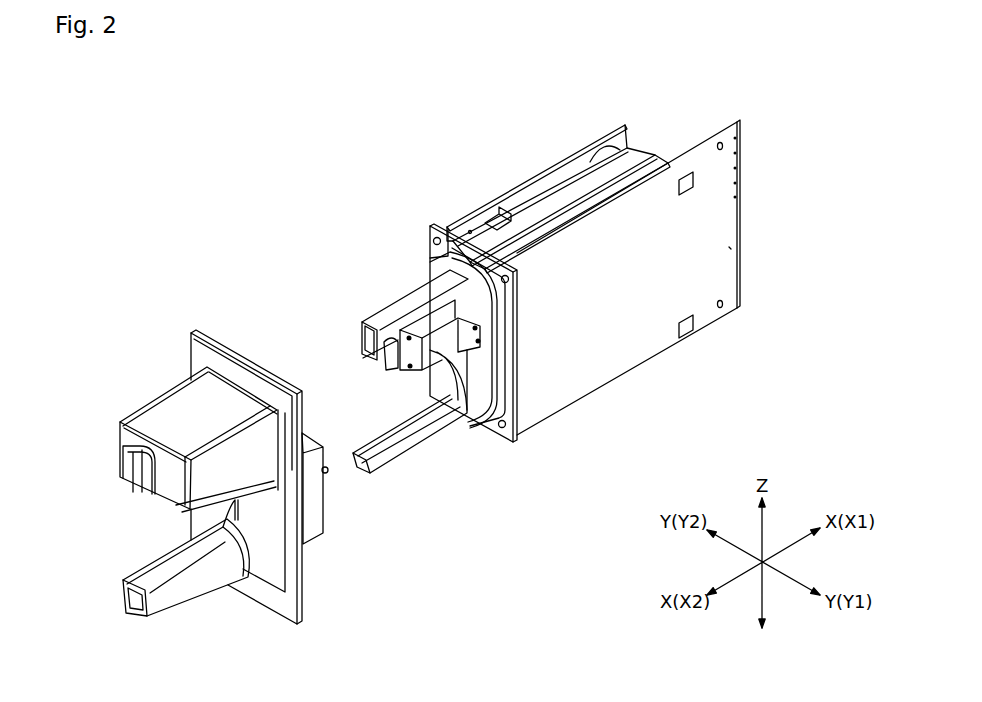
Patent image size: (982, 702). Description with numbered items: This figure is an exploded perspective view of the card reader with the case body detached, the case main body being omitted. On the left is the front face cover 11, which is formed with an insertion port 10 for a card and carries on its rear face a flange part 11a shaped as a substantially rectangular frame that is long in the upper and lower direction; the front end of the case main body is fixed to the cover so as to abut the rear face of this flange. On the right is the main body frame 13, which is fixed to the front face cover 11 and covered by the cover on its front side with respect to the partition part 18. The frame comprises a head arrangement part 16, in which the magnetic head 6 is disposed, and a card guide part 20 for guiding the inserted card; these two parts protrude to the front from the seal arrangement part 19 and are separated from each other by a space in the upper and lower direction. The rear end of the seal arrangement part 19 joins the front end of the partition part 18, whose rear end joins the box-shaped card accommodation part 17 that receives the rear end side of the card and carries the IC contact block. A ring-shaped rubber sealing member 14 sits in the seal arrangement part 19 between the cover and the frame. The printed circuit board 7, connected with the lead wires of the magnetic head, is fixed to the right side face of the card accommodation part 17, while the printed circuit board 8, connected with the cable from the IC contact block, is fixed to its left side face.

The magnetic head 6 is at (428, 357).
The printed circuit board 7 is at (722, 128).
The printed circuit board 8 is at (600, 138).
The insertion port 10 is at (142, 469).
The front face cover 11 is at (195, 487).
The flange part 11a is at (248, 358).
The main body frame 13 is at (557, 200).
The sealing member 14 is at (468, 230).
The head arrangement part 16 is at (377, 318).
The card accommodation part 17 is at (542, 208).
The partition part 18 is at (428, 243).
The seal arrangement part 19 is at (430, 262).
The card guide part 20 is at (425, 447).